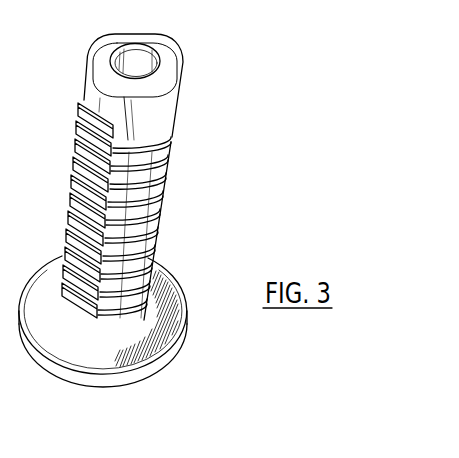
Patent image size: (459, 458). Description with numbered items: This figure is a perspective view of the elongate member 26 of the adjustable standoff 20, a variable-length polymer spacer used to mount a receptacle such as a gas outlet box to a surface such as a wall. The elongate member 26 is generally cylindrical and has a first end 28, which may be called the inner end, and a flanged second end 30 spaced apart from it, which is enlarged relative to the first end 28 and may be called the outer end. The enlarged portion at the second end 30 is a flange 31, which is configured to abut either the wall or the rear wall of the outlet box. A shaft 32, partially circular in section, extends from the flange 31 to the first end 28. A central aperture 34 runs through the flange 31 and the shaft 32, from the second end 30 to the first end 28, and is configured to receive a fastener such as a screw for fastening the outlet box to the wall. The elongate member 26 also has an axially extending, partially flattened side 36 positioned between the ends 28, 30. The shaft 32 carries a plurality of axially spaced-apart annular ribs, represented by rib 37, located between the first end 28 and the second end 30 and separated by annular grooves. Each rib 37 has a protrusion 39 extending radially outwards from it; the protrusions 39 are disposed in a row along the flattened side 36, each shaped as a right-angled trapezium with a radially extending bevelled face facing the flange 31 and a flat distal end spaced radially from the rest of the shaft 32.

The adjustable standoff 20 is at (228, 48).
The elongate member 26 is at (131, 211).
The first end 28 is at (106, 72).
The second end 30 is at (119, 341).
The flange 31 is at (131, 374).
The shaft 32 is at (172, 139).
The central aperture 34 is at (142, 53).
The partially flattened side 36 is at (100, 88).
The annular rib 37 is at (157, 217).
The protrusion 39 is at (77, 143).